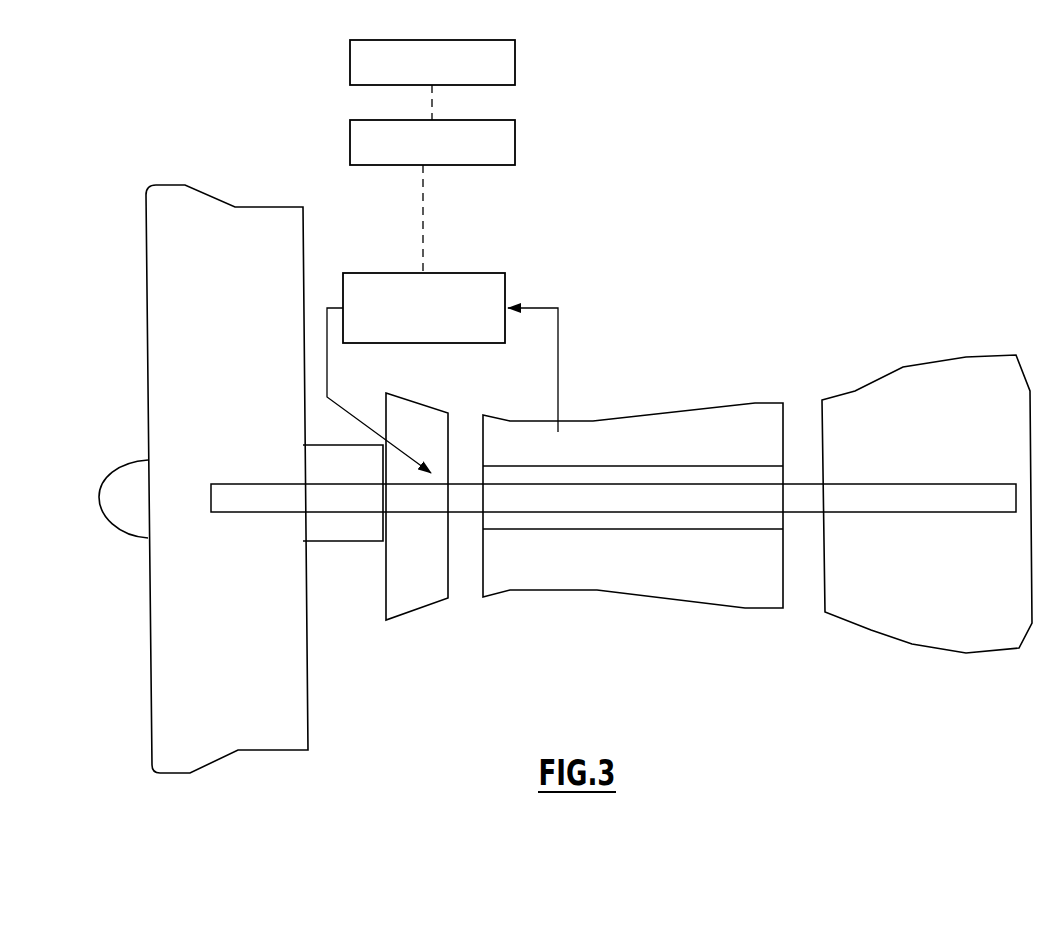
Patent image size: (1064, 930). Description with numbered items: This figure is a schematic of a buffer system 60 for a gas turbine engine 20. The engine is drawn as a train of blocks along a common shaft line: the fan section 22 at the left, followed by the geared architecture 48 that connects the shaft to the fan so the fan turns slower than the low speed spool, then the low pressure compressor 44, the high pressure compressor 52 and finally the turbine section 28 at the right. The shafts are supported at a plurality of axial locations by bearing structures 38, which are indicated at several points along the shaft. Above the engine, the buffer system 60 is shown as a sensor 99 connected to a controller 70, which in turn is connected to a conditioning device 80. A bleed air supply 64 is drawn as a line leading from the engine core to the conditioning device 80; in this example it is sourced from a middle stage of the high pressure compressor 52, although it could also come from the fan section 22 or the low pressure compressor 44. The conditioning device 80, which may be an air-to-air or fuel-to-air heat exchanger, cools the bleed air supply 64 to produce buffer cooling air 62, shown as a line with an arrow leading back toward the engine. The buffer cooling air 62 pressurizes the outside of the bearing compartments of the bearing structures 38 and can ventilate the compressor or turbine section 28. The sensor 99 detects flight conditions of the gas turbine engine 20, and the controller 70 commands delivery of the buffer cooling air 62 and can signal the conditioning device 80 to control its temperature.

The gas turbine engine 20 is at (869, 309).
The fan section 22 is at (212, 700).
The turbine section 28 is at (919, 582).
The bearing structures 38 is at (248, 502).
The low pressure compressor 44 is at (413, 590).
The geared architecture 48 is at (357, 528).
The high pressure compressor 52 is at (628, 571).
The buffer system 60 is at (568, 218).
The buffer cooling air 62 is at (327, 362).
The bleed air supply 64 is at (559, 382).
The controller 70 is at (515, 146).
The conditioning device 80 is at (505, 284).
The sensor 99 is at (515, 57).